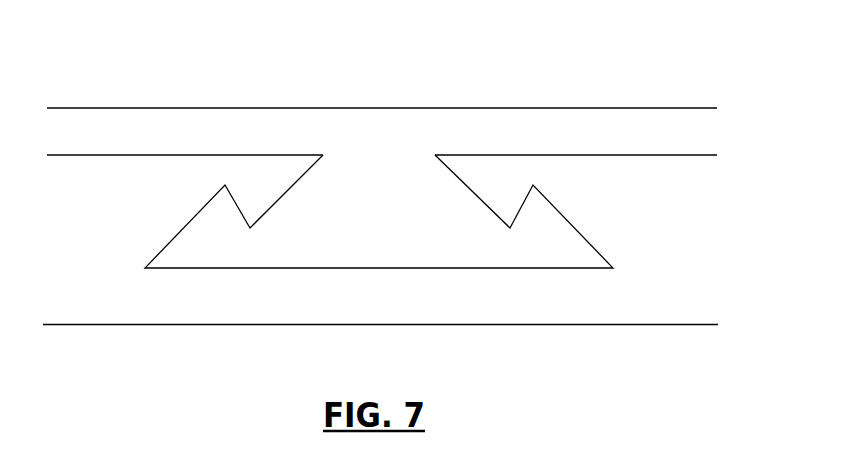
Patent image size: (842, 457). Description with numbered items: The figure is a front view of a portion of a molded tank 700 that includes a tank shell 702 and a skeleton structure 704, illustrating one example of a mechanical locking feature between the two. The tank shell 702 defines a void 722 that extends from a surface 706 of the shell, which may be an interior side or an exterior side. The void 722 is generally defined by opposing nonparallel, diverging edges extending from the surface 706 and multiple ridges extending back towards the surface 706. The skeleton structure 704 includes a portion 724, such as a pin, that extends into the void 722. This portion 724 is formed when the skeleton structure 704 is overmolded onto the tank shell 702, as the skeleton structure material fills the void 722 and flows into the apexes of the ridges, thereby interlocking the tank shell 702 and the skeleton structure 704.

The molded tank 700 is at (233, 43).
The tank shell 702 is at (595, 302).
The skeleton structure 704 is at (663, 132).
The surface 706 is at (620, 157).
The void 722 is at (405, 236).
The portion 724 is at (342, 203).